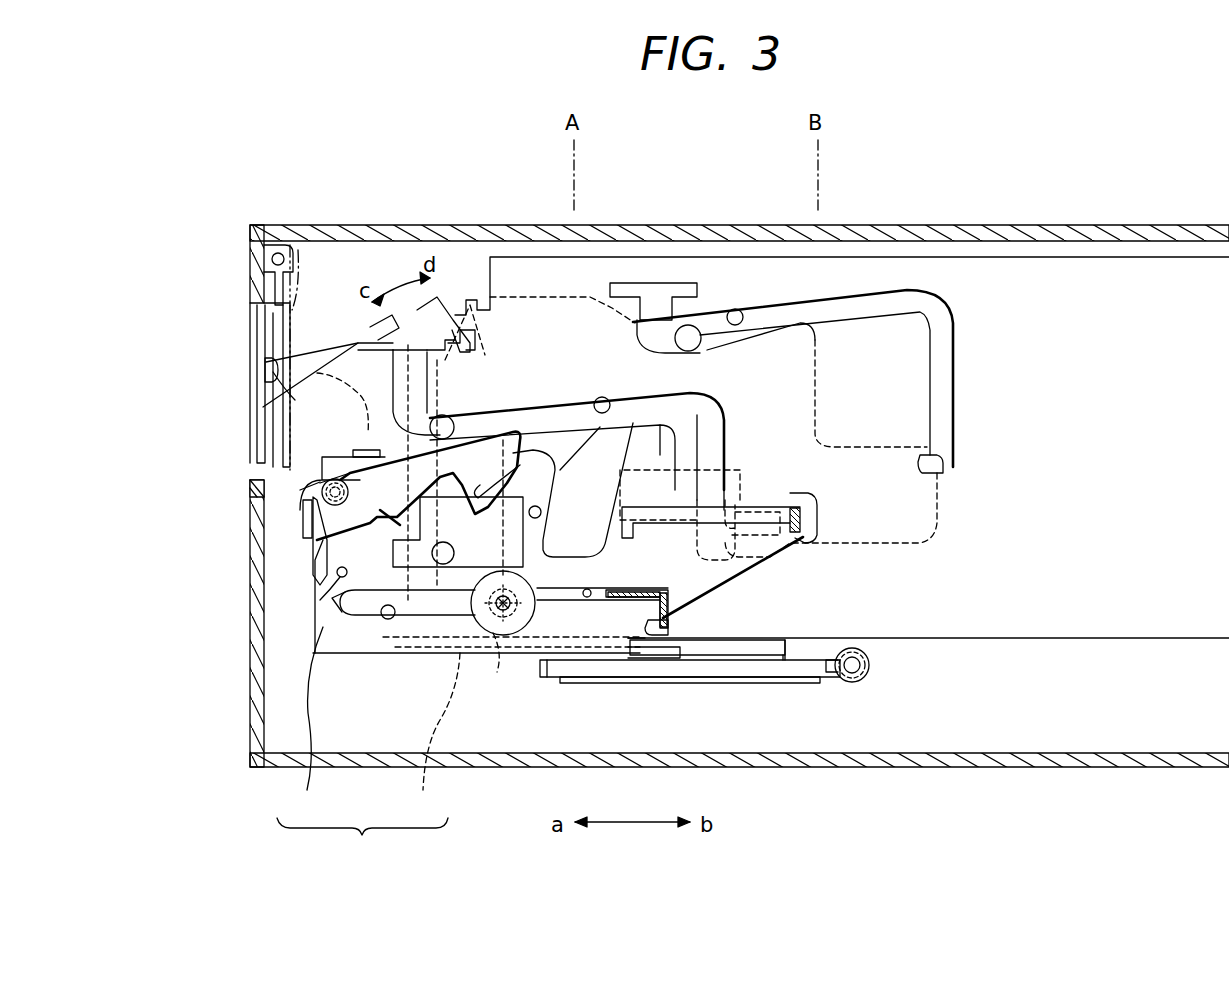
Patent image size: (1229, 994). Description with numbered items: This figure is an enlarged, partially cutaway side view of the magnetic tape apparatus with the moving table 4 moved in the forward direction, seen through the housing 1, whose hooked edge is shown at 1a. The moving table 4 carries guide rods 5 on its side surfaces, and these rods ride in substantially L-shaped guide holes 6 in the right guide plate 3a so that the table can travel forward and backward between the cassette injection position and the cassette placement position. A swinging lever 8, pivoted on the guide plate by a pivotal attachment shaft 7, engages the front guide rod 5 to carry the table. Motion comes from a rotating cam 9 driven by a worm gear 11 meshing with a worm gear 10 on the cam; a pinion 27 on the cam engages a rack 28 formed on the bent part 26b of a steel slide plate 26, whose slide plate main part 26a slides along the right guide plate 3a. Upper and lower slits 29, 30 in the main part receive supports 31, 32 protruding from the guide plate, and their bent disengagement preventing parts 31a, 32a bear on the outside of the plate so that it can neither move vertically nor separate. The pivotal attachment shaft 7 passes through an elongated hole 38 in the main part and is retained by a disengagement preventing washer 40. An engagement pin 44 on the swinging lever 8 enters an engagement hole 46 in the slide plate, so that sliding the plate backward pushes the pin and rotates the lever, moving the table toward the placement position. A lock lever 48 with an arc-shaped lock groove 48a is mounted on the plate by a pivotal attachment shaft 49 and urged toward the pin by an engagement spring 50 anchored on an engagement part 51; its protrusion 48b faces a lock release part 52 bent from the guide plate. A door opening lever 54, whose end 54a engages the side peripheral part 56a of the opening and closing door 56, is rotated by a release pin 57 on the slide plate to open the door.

The housing 1 is at (1160, 226).
The housing hook portion 1a is at (268, 300).
The right guide plate 3a is at (1068, 605).
The moving table 4 is at (540, 300).
The guide rod 5 is at (445, 416).
The guide hole 6 is at (603, 397).
The pivotal attachment shaft 7 is at (498, 670).
The swinging lever 8 is at (372, 320).
The rotating cam 9 is at (790, 688).
The worm gear 10 is at (845, 682).
The worm gear 11 is at (870, 667).
The slide plate 26 is at (458, 702).
The slide plate main part 26a is at (303, 723).
The bent part 26b is at (432, 736).
The pinion 27 is at (748, 665).
The rack 28 is at (693, 655).
The upper slit 29 is at (735, 508).
The lower slit 30 is at (590, 590).
The support 31 is at (798, 505).
The disengagement preventing part 31a is at (805, 542).
The support 32 is at (640, 590).
The disengagement preventing part 32a is at (660, 636).
The elongated hole 38 is at (388, 620).
The disengagement preventing washer 40 is at (530, 612).
The engagement pin 44 is at (450, 548).
The engagement hole 46 is at (540, 513).
The lock lever 48 is at (485, 445).
The lock groove 48a is at (515, 460).
The protrusion 48b is at (310, 560).
The pivotal attachment shaft 49 is at (250, 492).
The engagement spring 50 is at (348, 470).
The engagement part 51 is at (358, 447).
The lock release part 52 is at (302, 520).
The door opening lever 54 is at (292, 375).
The end of door opening lever 54a is at (266, 370).
The opening and closing door 56 is at (257, 343).
The side peripheral part 56a is at (300, 260).
The release pin 57 is at (330, 592).